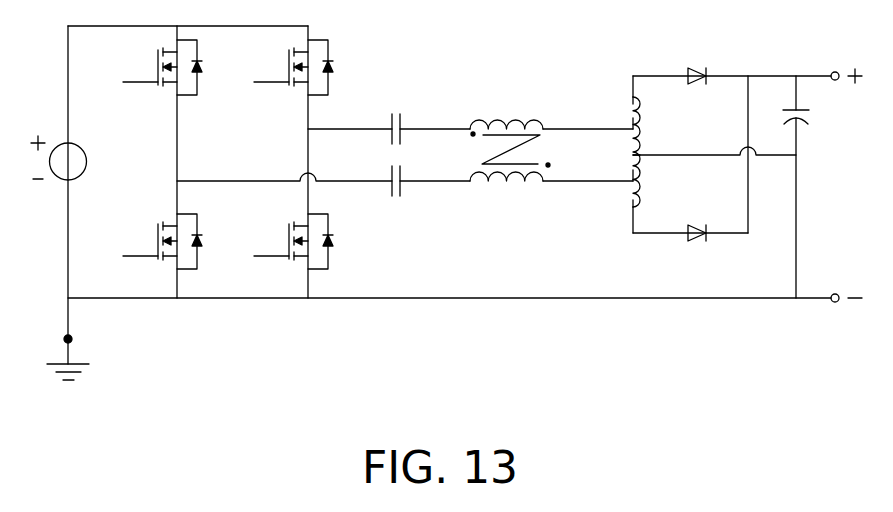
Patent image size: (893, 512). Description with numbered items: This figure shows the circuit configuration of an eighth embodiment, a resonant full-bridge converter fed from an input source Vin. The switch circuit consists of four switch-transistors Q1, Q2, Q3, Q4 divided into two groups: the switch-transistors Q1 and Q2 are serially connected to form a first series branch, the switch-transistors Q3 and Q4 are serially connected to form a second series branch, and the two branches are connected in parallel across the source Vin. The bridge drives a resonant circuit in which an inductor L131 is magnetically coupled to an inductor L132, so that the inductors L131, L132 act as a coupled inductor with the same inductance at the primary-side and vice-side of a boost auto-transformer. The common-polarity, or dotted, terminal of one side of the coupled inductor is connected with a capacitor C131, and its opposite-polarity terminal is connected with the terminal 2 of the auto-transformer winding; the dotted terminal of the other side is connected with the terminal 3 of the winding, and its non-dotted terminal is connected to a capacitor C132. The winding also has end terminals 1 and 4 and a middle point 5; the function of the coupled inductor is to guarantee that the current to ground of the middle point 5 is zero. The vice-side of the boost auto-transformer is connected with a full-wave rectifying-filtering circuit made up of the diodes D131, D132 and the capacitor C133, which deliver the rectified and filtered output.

The input voltage source Vin is at (77, 158).
The switch-transistor Q1 is at (178, 67).
The switch-transistor Q2 is at (178, 241).
The switch-transistor Q3 is at (309, 67).
The switch-transistor Q4 is at (310, 241).
The capacitor C131 is at (406, 116).
The capacitor C132 is at (406, 197).
The inductor L131 is at (506, 112).
The inductor L132 is at (510, 192).
The transformer secondary terminal 1 is at (634, 104).
The terminal of the winding of the boost auto-transformer 2 is at (634, 122).
The terminal of the winding of the boost auto-transformer 3 is at (634, 175).
The transformer secondary terminal 4 is at (634, 205).
The middle point (terminal) 5 is at (641, 156).
The diode D131 is at (703, 60).
The diode D132 is at (706, 253).
The capacitor C133 is at (825, 122).